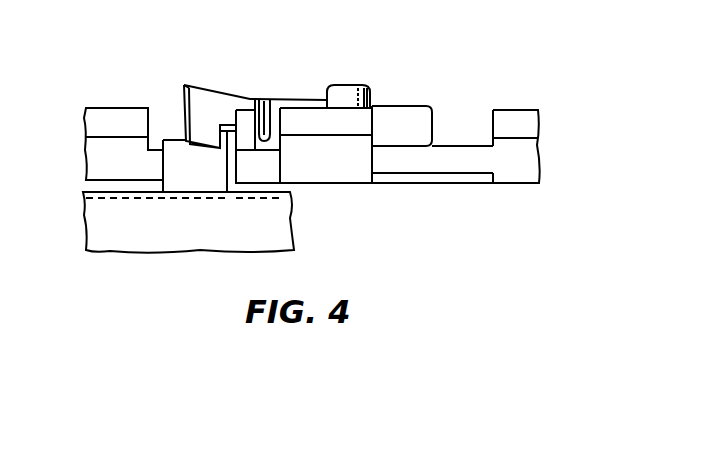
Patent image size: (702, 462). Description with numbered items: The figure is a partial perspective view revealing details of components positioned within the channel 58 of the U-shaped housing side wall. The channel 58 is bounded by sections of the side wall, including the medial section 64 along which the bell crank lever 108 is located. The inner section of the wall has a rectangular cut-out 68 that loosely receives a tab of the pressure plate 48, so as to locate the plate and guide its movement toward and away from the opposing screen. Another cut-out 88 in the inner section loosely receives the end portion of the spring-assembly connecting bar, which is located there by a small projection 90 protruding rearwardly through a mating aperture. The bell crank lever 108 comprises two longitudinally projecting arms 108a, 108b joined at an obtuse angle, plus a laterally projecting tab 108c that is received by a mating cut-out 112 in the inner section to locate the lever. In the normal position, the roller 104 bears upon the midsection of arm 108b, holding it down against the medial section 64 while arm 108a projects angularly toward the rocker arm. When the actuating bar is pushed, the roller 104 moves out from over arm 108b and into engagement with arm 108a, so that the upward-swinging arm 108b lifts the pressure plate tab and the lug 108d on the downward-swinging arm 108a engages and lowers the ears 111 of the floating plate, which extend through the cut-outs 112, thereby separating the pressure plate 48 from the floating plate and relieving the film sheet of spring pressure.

The pressure plate 48 is at (270, 228).
The cut-out 88 is at (151, 117).
The ears 111 is at (168, 140).
The lug 108d is at (200, 147).
The arm 108a is at (190, 92).
The bell crank lever 108 is at (297, 101).
The projection 90 is at (240, 115).
The tab 108c is at (267, 148).
The cut-out 112 is at (257, 112).
The cut-out 68 is at (375, 119).
The roller 104 is at (343, 92).
The arm 108b is at (418, 115).
The medial section 64 is at (527, 186).
The channel 58 is at (510, 157).